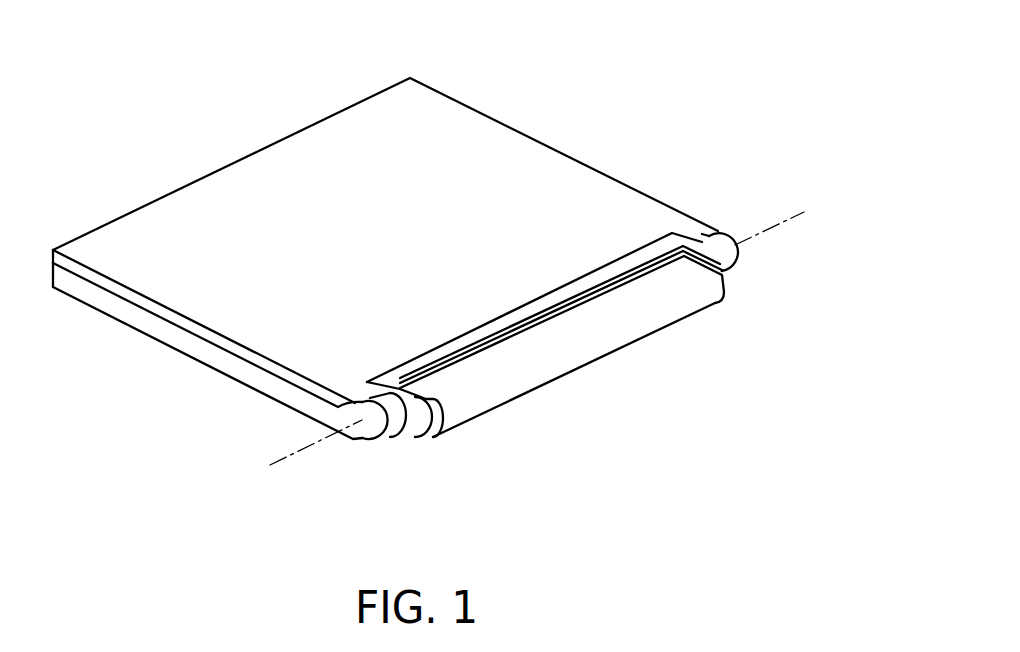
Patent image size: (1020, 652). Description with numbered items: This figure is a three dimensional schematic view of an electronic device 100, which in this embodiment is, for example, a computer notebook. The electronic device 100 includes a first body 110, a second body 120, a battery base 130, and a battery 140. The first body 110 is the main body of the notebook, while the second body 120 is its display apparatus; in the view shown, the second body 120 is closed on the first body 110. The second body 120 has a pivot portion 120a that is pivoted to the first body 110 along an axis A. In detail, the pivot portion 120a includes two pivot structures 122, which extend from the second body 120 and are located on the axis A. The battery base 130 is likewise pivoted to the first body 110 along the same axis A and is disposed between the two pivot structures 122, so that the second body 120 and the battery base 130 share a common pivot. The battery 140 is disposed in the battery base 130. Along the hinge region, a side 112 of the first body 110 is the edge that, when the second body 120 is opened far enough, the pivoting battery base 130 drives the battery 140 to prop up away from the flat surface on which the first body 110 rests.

The electronic device 100 is at (768, 505).
The first body 110 is at (220, 397).
The side 112 is at (350, 448).
The second body 120 is at (313, 155).
The pivot portion 120a is at (554, 221).
The pivot structures 122 is at (390, 403).
The battery base 130 is at (410, 430).
The battery 140 is at (573, 347).
The axis A is at (303, 450).